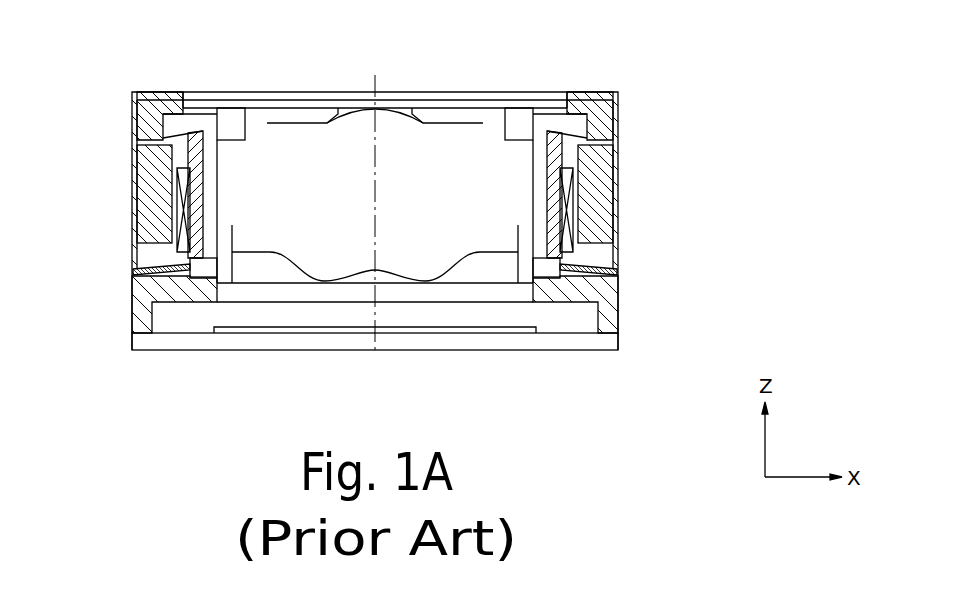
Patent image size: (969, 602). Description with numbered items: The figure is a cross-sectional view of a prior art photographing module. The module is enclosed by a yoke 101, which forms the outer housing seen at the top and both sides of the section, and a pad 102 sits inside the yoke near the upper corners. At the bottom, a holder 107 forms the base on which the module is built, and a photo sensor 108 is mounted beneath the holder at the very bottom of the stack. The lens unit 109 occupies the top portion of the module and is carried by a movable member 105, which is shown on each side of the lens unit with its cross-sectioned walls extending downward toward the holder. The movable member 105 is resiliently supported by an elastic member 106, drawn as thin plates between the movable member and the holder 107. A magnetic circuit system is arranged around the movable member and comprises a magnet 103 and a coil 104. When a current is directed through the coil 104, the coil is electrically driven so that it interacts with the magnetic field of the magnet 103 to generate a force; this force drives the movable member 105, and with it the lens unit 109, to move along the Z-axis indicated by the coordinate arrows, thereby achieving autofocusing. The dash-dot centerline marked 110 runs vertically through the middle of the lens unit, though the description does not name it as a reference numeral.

The yoke 101 is at (132, 97).
The pad 102 is at (137, 133).
The magnet 103 is at (140, 195).
The coil 104 is at (560, 207).
The movable member 105 is at (565, 147).
The elastic member 106 is at (137, 272).
The holder 107 is at (137, 310).
The photo sensor 108 is at (565, 341).
The lens unit 109 is at (463, 117).
The optical axis / lens 110 is at (382, 117).